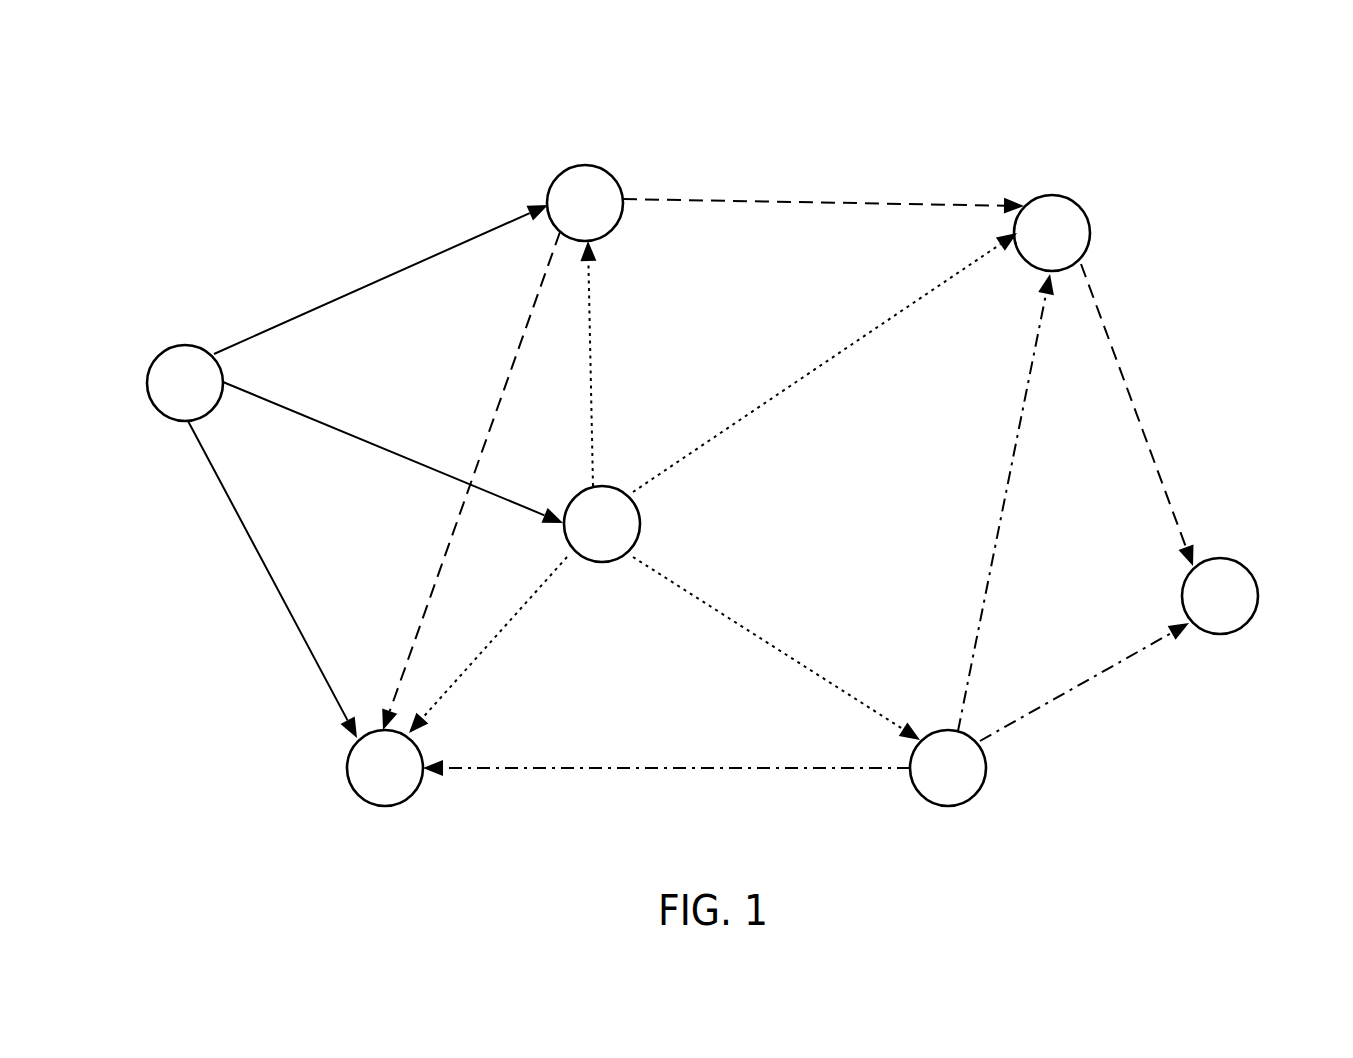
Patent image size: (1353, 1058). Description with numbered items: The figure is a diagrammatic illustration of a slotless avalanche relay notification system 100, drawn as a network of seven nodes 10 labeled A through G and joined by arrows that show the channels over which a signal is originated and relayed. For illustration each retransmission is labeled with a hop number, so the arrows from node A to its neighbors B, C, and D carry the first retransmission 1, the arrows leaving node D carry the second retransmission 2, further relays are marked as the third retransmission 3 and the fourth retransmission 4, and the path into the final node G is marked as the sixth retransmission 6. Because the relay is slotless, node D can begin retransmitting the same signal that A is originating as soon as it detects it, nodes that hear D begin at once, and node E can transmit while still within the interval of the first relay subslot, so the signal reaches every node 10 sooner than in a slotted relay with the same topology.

The slotless avalanche relay notification system 100 is at (216, 128).
The node 10 is at (187, 345).
The first retransmission (1n) 1 is at (375, 471).
The second retransmission (2n) 2 is at (713, 486).
The third retransmission (3n) 3 is at (703, 444).
The fourth retransmission (4n) 4 is at (806, 548).
The sixth retransmission (6n) 6 is at (1137, 415).